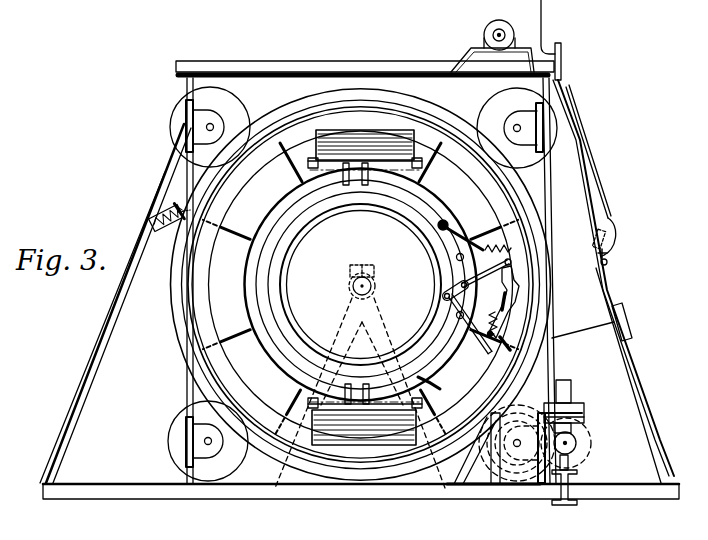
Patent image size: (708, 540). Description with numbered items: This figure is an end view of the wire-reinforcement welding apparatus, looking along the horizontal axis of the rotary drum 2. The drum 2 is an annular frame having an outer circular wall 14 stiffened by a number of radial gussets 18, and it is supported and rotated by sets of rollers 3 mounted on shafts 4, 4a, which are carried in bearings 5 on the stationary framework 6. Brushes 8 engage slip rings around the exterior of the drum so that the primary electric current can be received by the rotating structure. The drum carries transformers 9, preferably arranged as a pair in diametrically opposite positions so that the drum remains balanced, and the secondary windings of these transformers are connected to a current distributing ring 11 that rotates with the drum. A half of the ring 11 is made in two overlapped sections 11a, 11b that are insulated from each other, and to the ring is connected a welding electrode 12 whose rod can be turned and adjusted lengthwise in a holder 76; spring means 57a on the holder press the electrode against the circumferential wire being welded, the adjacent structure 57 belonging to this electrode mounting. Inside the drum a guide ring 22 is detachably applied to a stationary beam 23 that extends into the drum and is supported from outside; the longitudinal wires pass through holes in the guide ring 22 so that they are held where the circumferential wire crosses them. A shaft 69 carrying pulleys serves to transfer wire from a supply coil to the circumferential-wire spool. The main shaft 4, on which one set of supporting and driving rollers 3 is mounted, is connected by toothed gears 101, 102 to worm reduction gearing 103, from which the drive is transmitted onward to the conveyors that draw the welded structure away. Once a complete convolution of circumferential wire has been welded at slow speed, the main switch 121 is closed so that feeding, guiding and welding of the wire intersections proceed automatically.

The drum 2 is at (341, 90).
The rollers 3 is at (170, 127).
The shaft 4 is at (516, 455).
The shaft 4a is at (206, 127).
The bearings 5 is at (199, 112).
The framework 6 is at (249, 70).
The brushes 8 is at (157, 210).
The transformers 9 is at (367, 130).
The current distributing ring 11 is at (287, 353).
The ring section 11a is at (428, 220).
The ring section 11b is at (434, 367).
The welding electrode 12 is at (447, 280).
The outer circular wall 14 is at (486, 350).
The radial gussets 18 is at (282, 172).
The guide ring 22 is at (343, 220).
The stationary beam 23 is at (349, 287).
The pawl 57 is at (512, 256).
The spring means 57a is at (507, 318).
The shaft 69 is at (490, 35).
The holder 76 is at (447, 295).
The toothed gear 101 is at (517, 488).
The toothed gear 102 is at (574, 452).
The worm reduction gearing 103 is at (584, 416).
The main switch 121 is at (608, 258).